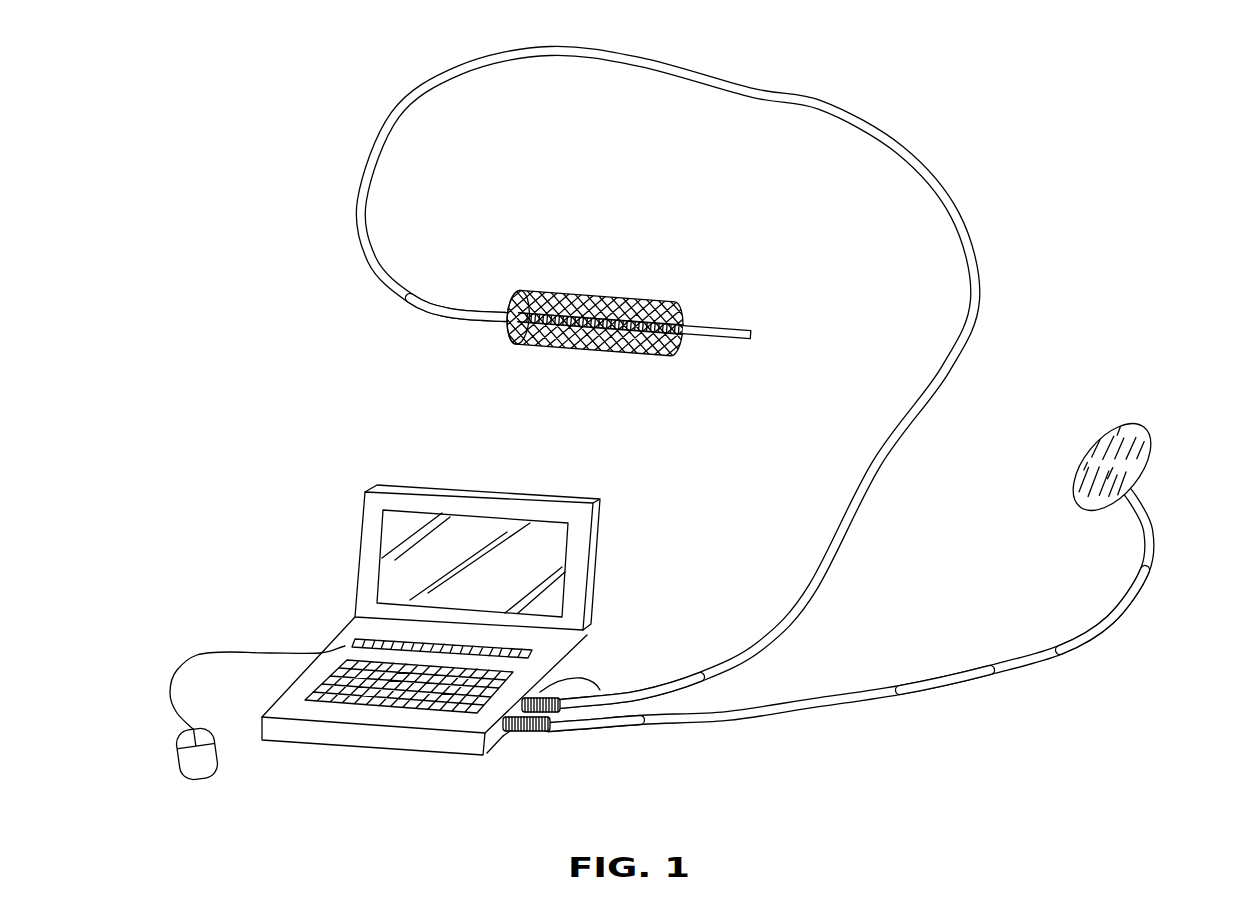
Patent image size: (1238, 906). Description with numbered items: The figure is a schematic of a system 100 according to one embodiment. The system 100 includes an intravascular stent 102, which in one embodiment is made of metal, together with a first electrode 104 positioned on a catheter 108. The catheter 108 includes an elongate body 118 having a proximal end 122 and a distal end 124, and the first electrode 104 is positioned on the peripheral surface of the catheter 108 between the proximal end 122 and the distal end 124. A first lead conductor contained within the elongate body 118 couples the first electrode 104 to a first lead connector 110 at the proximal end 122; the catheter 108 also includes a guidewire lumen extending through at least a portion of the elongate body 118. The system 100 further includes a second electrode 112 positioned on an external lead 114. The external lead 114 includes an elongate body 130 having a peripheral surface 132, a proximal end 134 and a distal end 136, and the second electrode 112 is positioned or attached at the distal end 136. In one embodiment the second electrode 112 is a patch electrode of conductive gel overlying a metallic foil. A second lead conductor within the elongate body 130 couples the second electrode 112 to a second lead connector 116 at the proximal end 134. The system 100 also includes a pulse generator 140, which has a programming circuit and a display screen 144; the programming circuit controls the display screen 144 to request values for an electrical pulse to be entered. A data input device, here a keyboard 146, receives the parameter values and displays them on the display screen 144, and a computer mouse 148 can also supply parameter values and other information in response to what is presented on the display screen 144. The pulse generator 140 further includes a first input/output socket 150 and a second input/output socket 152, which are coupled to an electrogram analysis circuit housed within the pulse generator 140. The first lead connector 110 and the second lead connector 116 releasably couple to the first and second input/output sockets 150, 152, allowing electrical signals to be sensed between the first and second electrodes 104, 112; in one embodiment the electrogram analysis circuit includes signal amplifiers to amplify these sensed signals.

The system 100 is at (1057, 150).
The intravascular stent 102 is at (637, 320).
The first electrode 104 is at (607, 303).
The catheter 108 is at (774, 108).
The first lead connector 110 is at (600, 716).
The second electrode 112 is at (1098, 440).
The external lead 114 is at (1034, 678).
The second lead connector 116 is at (545, 732).
The elongate body 118 is at (452, 312).
The proximal end 122 is at (598, 686).
The distal end 124 is at (744, 339).
The elongate body 130 is at (1072, 653).
The peripheral surface 132 is at (967, 688).
The proximal end 134 is at (512, 731).
The distal end 136 is at (1078, 466).
The pulse generator 140 is at (431, 639).
The display screen 144 is at (387, 580).
The keyboard 146 is at (345, 660).
The computer mouse 148 is at (179, 764).
The first input/output socket 150 is at (584, 677).
The second input/output socket 152 is at (506, 736).